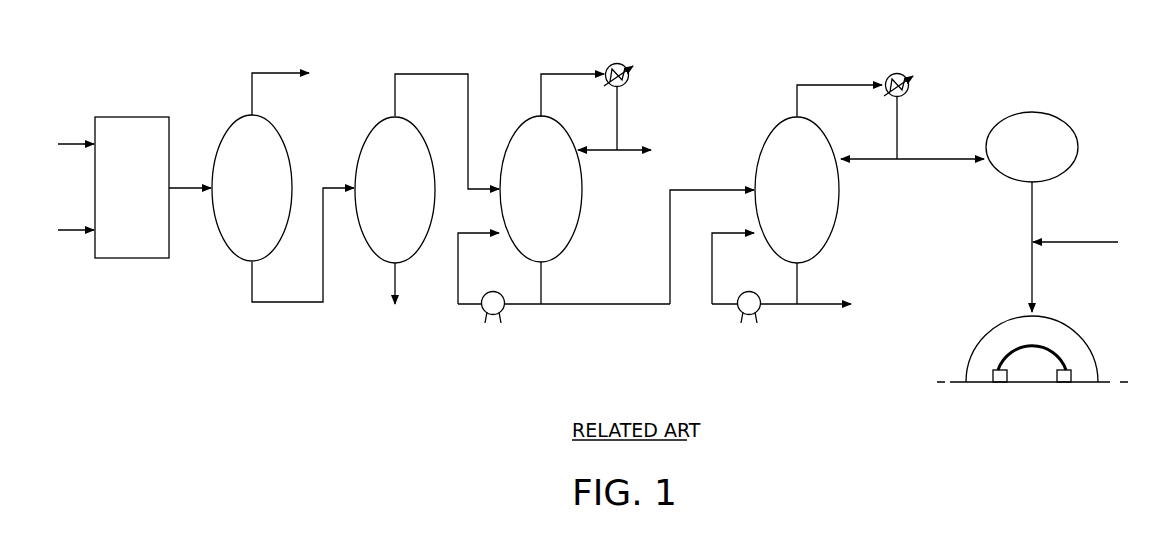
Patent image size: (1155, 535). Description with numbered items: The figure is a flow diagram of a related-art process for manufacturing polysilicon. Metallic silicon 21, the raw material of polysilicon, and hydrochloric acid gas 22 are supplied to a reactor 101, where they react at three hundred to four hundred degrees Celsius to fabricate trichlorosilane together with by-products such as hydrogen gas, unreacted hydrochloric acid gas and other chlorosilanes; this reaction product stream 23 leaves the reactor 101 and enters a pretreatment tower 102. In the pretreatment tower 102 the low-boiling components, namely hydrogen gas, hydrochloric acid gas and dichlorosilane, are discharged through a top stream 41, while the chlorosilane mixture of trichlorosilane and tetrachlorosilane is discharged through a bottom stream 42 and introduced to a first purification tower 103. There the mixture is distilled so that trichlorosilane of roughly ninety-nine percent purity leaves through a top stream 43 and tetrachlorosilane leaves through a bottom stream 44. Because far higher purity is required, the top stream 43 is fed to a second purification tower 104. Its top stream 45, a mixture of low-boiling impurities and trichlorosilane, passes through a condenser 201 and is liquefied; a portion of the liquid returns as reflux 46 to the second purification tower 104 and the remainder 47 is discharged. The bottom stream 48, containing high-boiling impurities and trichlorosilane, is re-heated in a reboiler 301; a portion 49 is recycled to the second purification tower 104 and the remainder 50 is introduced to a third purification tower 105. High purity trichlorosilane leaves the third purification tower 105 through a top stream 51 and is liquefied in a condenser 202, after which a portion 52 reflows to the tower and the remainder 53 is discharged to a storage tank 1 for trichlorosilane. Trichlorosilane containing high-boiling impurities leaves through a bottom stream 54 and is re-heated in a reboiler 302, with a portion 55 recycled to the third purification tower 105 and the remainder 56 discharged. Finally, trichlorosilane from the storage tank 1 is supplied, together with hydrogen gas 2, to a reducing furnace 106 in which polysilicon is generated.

The storage tank for trichlorosilane 1 is at (1032, 147).
The hydrogen gas 2 is at (1082, 247).
The metallic silicon 21 is at (60, 144).
The hydrochloric acid gas 22 is at (60, 230).
The mixed feed stream 23 is at (188, 185).
The top stream of the pretreatment tower 41 is at (275, 73).
The bottom stream of the pretreatment tower 42 is at (283, 302).
The top stream of the first purification tower 43 is at (428, 74).
The bottom stream of the first purification tower 44 is at (395, 289).
The top stream of the second purification tower 45 is at (570, 74).
The condensed reflux stream 46 is at (602, 152).
The remainder of the liquefied mixture 47 is at (648, 151).
The bottom stream of the second purification tower 48 is at (541, 283).
The portion of the re-heated mixture 49 is at (458, 281).
The remainder of the re-heated mixture 50 is at (710, 190).
The top stream of the third purification tower 51 is at (841, 85).
The portion of the liquefied trichlorosilane 52 is at (868, 162).
The remainder of the liquefied trichlorosilane 53 is at (942, 162).
The bottom stream of the third purification tower 54 is at (800, 276).
The portion of the re-heated trichlorosilane 55 is at (712, 272).
The remainder of the re-heated trichlorosilane 56 is at (830, 306).
The reactor 101 is at (132, 187).
The pretreatment tower 102 is at (252, 188).
The first purification tower 103 is at (395, 190).
The second purification tower 104 is at (541, 189).
The third purification tower 105 is at (797, 190).
The reducing furnace 106 is at (1063, 344).
The condenser 201 is at (620, 63).
The condenser 202 is at (886, 74).
The reboiler 301 is at (493, 316).
The reboiler 302 is at (752, 316).